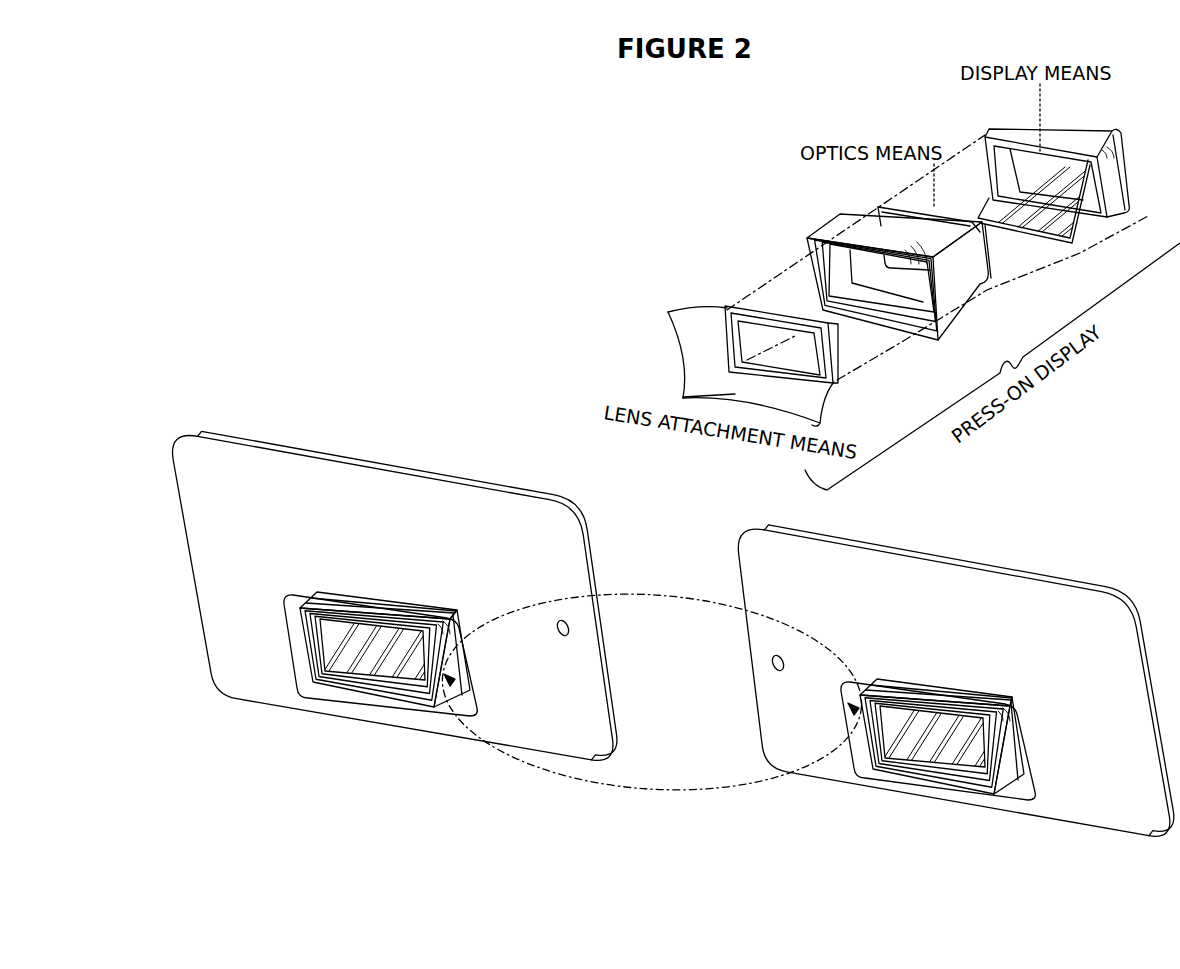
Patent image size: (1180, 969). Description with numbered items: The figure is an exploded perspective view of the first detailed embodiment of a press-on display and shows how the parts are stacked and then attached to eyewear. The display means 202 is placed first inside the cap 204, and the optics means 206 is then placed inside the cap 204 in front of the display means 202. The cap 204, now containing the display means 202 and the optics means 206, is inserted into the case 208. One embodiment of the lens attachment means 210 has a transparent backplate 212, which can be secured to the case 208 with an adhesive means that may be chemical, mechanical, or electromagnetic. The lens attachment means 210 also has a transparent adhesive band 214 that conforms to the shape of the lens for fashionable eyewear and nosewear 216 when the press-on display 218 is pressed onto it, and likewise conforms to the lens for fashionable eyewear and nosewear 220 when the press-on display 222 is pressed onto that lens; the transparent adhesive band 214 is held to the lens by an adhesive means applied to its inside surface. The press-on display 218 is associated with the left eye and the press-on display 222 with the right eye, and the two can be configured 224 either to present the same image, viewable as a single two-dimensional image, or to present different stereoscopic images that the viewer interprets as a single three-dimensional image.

The display means 202 is at (1052, 242).
The cap 204 is at (1017, 132).
The optics means 206 is at (980, 293).
The case 208 is at (840, 227).
The lens attachment means 210 is at (700, 302).
The transparent backplate 212 is at (837, 363).
The transparent adhesive band 214 is at (737, 395).
The lens for fashionable eyewear and nosewear 216 is at (453, 482).
The press-on display 218 is at (300, 628).
The lens for fashionable eyewear and nosewear 220 is at (1025, 568).
The press-on display 222 is at (1003, 753).
The configuration of the press-on displays 224 is at (655, 600).